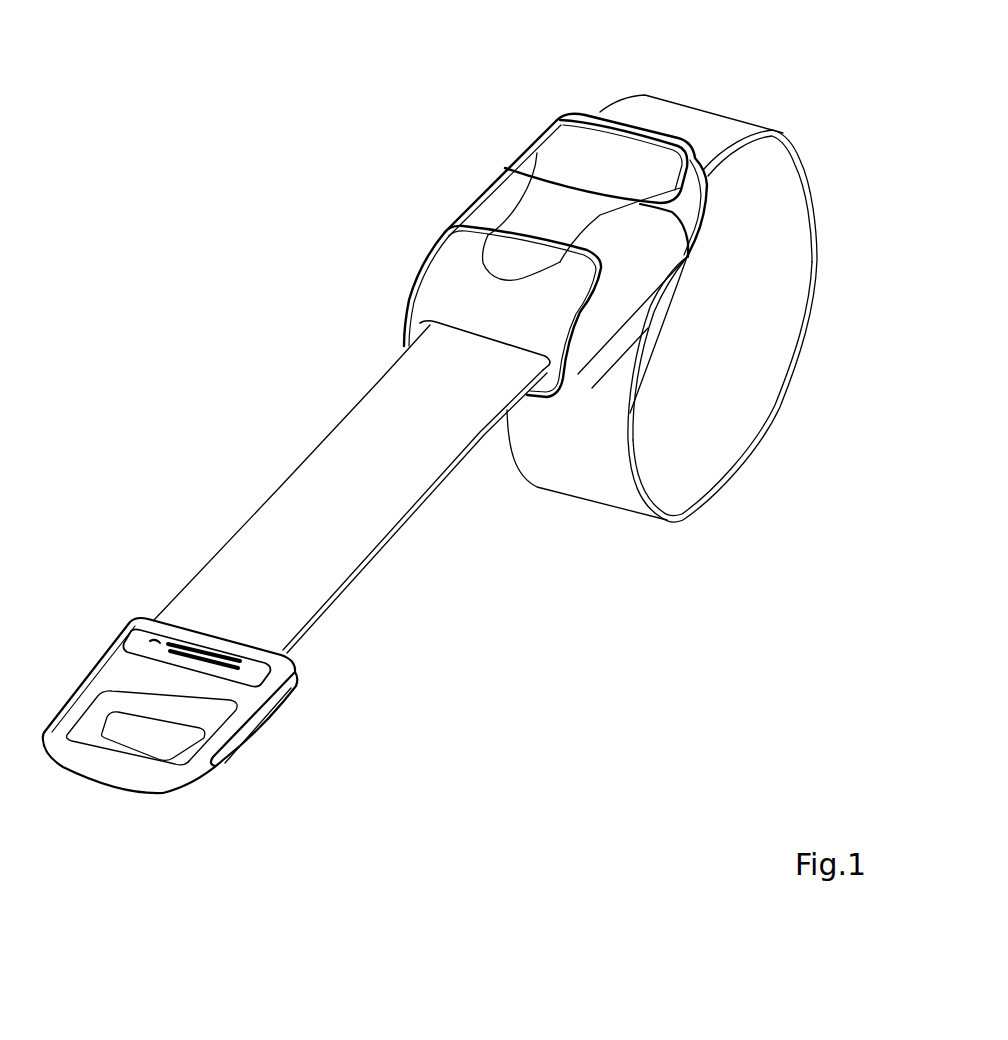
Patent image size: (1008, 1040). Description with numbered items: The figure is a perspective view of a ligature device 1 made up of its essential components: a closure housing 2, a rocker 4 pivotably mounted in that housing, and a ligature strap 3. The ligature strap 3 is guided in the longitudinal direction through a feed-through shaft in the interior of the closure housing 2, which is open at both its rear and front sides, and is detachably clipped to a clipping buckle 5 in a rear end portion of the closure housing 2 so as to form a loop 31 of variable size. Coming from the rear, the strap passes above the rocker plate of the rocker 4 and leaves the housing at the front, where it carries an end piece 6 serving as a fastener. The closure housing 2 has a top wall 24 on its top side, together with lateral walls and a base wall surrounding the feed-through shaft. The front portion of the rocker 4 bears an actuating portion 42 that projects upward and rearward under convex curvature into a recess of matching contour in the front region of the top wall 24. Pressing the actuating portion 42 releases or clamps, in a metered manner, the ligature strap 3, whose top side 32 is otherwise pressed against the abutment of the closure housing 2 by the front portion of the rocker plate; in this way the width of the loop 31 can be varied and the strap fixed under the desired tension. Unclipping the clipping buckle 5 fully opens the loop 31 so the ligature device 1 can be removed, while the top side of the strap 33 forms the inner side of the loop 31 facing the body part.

The ligature device 1 is at (288, 135).
The closure housing 2 is at (467, 170).
The ligature strap 3 is at (290, 457).
The rocker 4 is at (448, 288).
The clipping buckle 5 is at (548, 120).
The end piece 6 is at (255, 733).
The top wall 24 is at (511, 190).
The loop 31 is at (806, 176).
The top side of the ligature strap 32 is at (406, 492).
The top side of the strap 33 is at (382, 550).
The actuating portion 42 is at (468, 255).